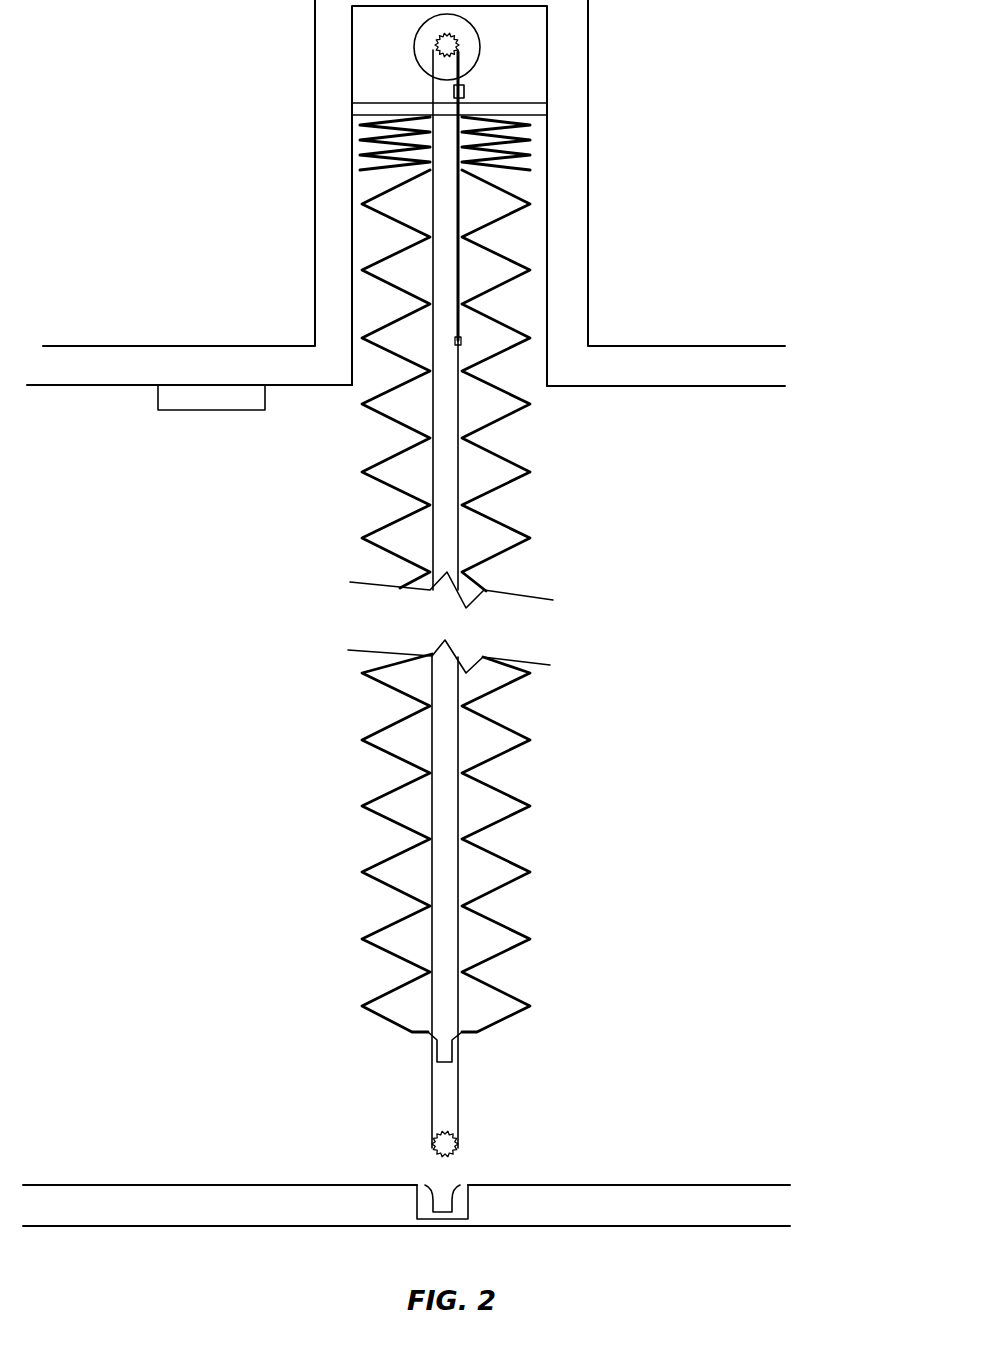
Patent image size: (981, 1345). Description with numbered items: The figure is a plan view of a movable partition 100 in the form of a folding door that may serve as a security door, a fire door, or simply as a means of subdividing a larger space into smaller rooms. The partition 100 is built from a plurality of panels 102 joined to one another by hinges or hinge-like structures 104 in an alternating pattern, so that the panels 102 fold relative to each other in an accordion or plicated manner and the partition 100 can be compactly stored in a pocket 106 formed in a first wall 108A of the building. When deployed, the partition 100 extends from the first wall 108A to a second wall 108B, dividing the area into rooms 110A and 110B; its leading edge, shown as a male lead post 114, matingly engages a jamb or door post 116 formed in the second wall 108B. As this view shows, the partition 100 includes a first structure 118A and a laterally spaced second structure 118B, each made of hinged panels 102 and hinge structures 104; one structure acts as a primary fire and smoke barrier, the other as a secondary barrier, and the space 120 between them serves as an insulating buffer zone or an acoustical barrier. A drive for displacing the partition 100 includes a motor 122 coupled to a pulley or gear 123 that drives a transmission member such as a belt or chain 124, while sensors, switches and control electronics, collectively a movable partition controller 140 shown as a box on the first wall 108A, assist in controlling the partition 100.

The movable partition 100 is at (433, 613).
The panels 102 is at (448, 574).
The hinge structures 104 is at (448, 574).
The pocket 106 is at (370, 369).
The first wall 108A is at (90, 386).
The second wall 108B is at (406, 1183).
The room 110A is at (205, 790).
The room 110B is at (706, 790).
The male lead post 114 is at (447, 1065).
The door post 116 is at (418, 1187).
The first structure 118A is at (369, 906).
The second structure 118B is at (527, 910).
The space 120 is at (479, 591).
The motor 122 is at (478, 60).
The pulley or gear 123 is at (433, 45).
The belt or chain 124 is at (462, 412).
The movable partition controller 140 is at (195, 411).